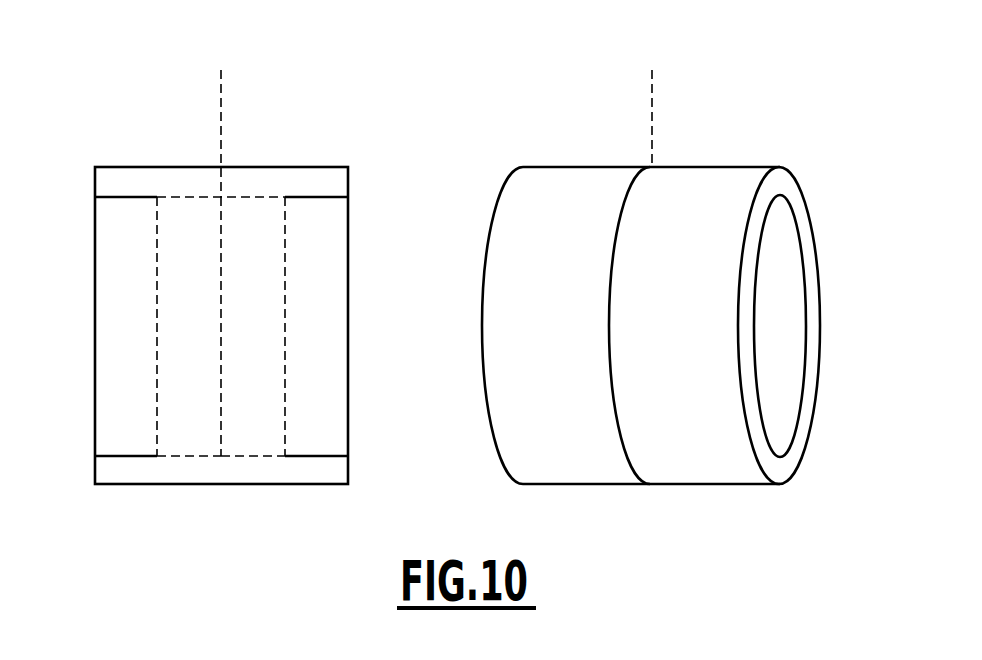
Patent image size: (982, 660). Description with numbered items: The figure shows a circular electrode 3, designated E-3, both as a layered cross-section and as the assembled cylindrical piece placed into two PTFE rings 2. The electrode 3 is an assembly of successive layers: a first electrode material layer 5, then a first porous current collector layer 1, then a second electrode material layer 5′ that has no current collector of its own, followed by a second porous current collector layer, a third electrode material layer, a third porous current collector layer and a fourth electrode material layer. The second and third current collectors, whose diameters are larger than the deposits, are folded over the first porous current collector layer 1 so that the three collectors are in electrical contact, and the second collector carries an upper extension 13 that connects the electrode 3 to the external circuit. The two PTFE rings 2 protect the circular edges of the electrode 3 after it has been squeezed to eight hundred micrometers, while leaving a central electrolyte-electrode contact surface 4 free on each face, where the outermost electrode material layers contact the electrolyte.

The first porous current collector layer 1 is at (157, 275).
The PTFE ring 2 is at (318, 177).
The circular electrode 3 is at (138, 147).
The central electrolyte-electrode contact surface 4 is at (780, 300).
The first electrode material layer 5 is at (126, 390).
The second electrode material layer 5′ is at (196, 404).
The upper extension 13 is at (221, 117).